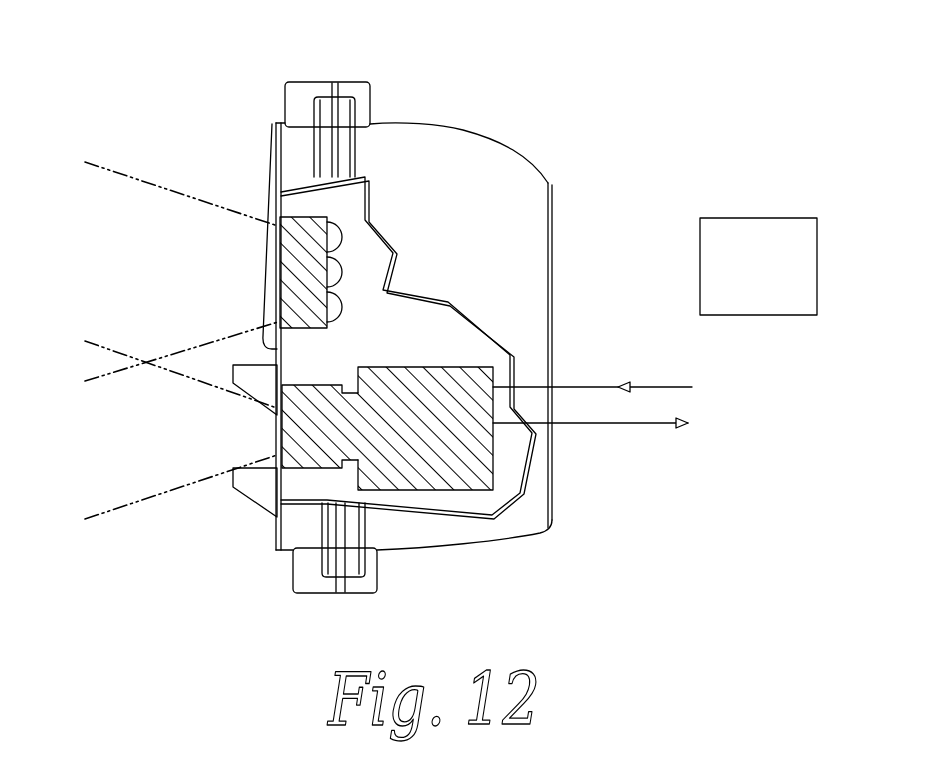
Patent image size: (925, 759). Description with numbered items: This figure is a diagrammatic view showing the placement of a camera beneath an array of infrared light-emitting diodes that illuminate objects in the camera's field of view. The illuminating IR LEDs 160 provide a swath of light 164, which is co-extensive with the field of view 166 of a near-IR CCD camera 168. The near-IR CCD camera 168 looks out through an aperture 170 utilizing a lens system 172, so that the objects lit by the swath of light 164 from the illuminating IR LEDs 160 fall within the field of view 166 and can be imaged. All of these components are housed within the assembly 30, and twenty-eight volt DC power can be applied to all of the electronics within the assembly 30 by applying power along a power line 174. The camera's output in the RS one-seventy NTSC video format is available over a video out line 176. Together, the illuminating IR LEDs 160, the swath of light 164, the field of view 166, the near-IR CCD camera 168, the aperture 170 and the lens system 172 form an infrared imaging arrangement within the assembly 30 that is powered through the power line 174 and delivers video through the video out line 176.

The assembly 30 is at (392, 121).
The illuminating IR LEDs 160 is at (327, 228).
The swath of light 164 is at (201, 285).
The field of view 166 is at (196, 442).
The near-IR CCD camera 168 is at (446, 468).
The aperture 170 is at (280, 430).
The lens system 172 is at (299, 395).
The power line 174 is at (577, 387).
The video out line 176 is at (585, 423).